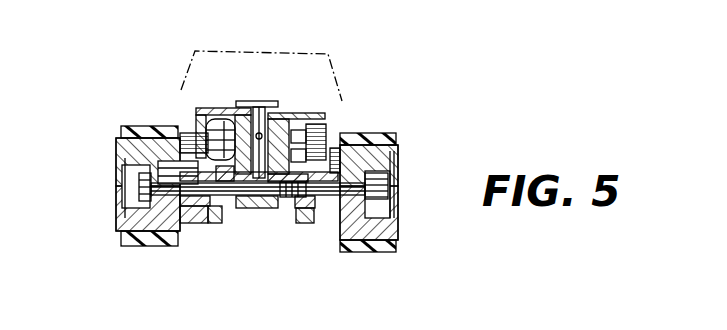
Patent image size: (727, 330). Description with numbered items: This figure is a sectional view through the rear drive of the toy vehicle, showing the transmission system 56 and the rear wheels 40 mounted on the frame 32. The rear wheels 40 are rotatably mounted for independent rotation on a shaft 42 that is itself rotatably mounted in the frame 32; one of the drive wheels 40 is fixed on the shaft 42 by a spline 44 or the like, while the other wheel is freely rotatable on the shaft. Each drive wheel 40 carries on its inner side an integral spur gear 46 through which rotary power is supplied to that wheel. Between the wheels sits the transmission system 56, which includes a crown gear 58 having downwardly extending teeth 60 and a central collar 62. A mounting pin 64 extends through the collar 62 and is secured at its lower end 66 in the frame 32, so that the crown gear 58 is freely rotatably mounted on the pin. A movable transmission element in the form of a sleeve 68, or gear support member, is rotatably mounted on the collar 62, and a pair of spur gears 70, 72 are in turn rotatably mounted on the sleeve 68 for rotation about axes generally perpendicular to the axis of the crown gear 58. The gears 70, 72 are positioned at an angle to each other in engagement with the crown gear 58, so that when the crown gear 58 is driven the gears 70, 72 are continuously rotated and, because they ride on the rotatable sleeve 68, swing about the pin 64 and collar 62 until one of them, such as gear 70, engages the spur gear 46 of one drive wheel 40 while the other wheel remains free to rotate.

The frame 32 is at (207, 208).
The rear wheels 40 is at (393, 143).
The shaft 42 is at (130, 182).
The spline 44 is at (380, 182).
The spur gear 46 is at (176, 102).
The transmission system 56 is at (322, 95).
The crown gear 58 is at (272, 103).
The teeth 60 is at (187, 104).
The central collar 62 is at (279, 190).
The mounting pin 64 is at (254, 93).
The lower end 66 is at (252, 195).
The sleeve 68 is at (224, 188).
The spur gear 70 is at (322, 122).
The spur gear 72 is at (220, 106).